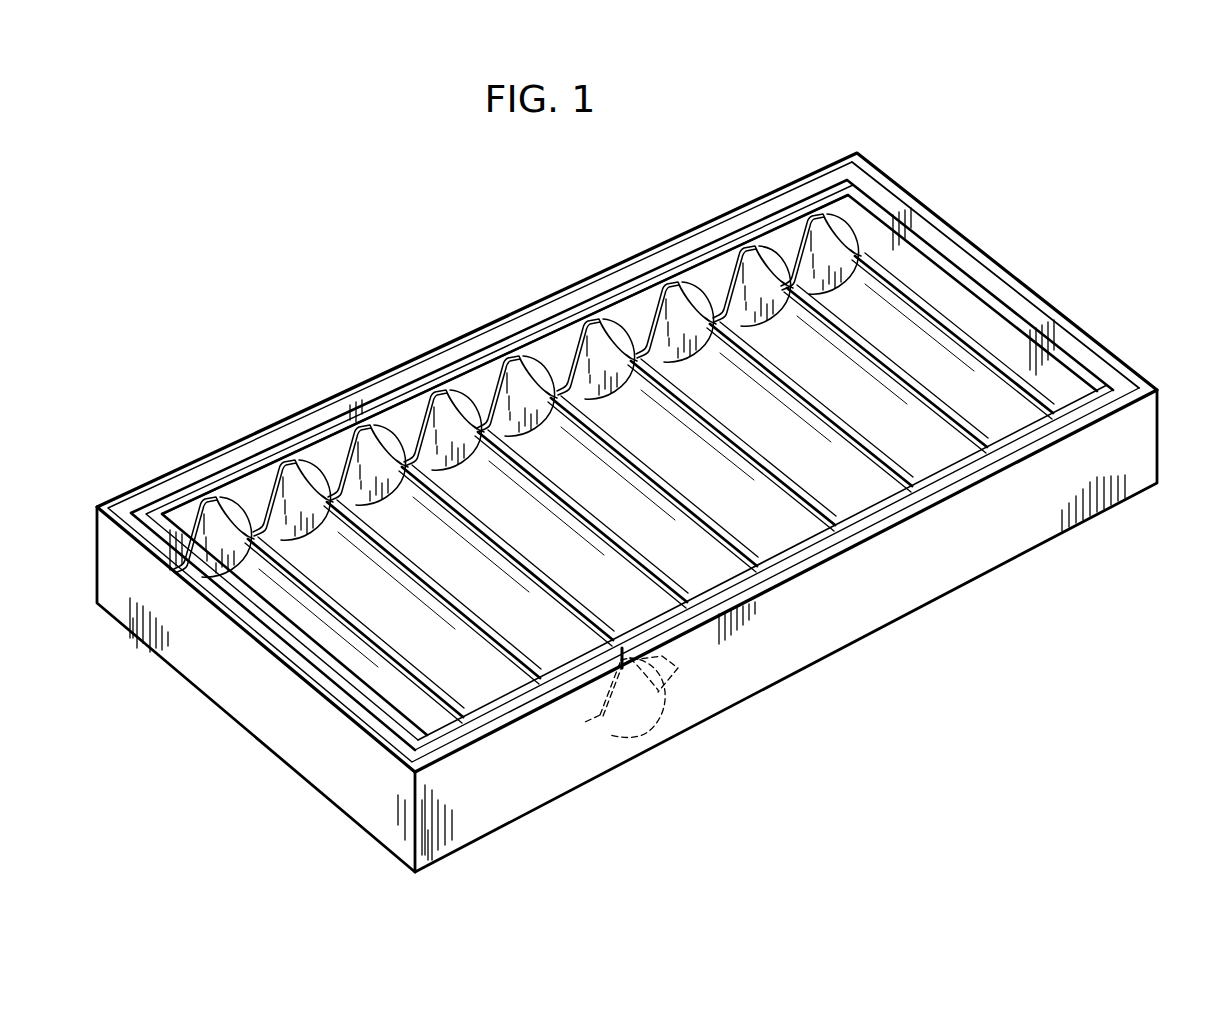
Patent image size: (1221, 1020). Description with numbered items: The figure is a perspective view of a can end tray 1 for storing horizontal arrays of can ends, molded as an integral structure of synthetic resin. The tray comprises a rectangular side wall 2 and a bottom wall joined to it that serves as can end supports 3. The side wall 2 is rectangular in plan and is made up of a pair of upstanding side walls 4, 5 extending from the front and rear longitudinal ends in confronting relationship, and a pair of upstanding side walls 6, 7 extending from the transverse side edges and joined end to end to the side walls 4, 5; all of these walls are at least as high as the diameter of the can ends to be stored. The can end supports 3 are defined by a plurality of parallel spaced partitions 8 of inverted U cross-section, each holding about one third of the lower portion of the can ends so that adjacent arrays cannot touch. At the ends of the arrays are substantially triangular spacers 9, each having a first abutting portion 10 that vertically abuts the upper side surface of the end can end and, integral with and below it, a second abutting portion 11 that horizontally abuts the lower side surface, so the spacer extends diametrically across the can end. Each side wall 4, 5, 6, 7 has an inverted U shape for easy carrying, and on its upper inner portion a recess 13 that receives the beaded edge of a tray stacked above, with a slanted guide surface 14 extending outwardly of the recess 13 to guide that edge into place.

The can end tray 1 is at (639, 476).
The side wall 2 is at (1057, 298).
The can end supports 3 is at (488, 495).
The upstanding side wall 4 is at (826, 608).
The upstanding side wall 5 is at (545, 270).
The upstanding side wall 6 is at (257, 685).
The upstanding side wall 7 is at (1012, 255).
The partition 8 is at (607, 300).
The spacer 9 is at (200, 520).
The first abutting portion 10 is at (222, 500).
The second abutting portion 11 is at (225, 570).
The recess 13 is at (1045, 355).
The slanted guide surface 14 is at (1100, 368).